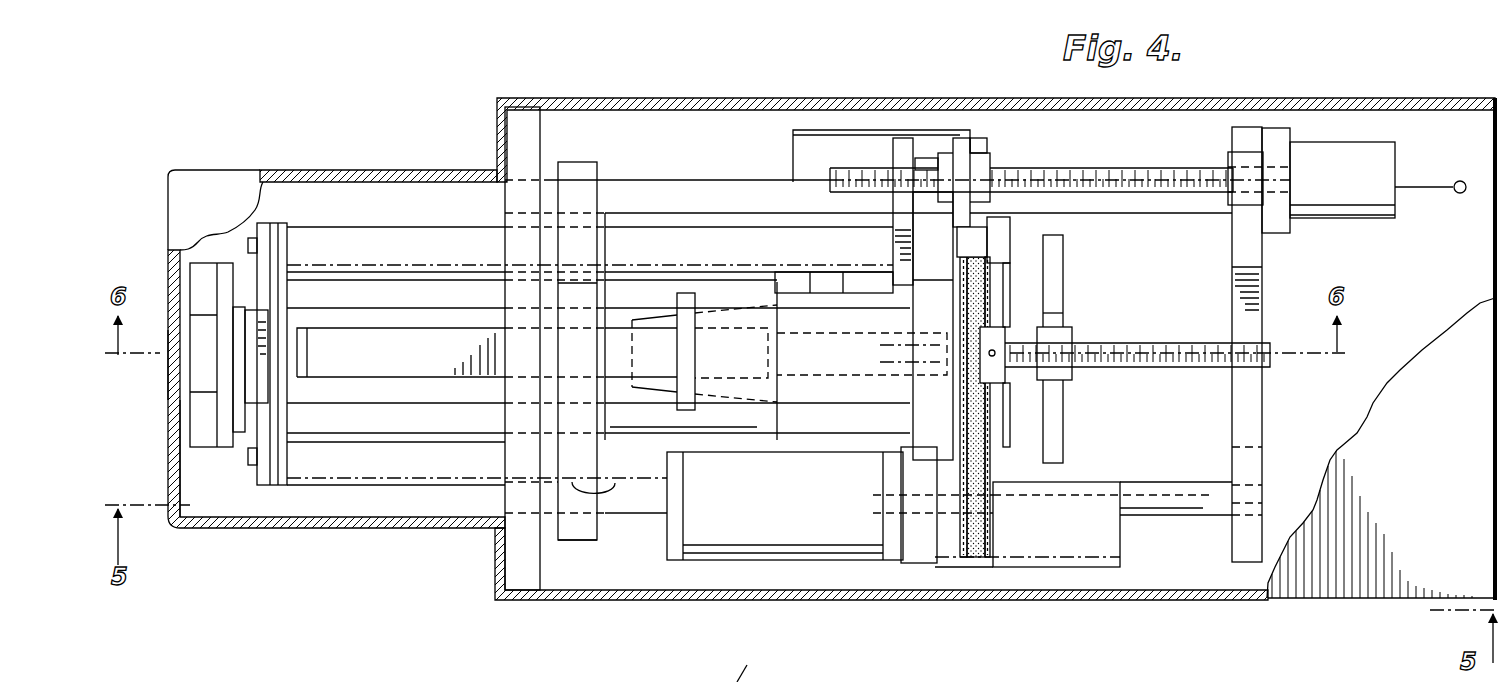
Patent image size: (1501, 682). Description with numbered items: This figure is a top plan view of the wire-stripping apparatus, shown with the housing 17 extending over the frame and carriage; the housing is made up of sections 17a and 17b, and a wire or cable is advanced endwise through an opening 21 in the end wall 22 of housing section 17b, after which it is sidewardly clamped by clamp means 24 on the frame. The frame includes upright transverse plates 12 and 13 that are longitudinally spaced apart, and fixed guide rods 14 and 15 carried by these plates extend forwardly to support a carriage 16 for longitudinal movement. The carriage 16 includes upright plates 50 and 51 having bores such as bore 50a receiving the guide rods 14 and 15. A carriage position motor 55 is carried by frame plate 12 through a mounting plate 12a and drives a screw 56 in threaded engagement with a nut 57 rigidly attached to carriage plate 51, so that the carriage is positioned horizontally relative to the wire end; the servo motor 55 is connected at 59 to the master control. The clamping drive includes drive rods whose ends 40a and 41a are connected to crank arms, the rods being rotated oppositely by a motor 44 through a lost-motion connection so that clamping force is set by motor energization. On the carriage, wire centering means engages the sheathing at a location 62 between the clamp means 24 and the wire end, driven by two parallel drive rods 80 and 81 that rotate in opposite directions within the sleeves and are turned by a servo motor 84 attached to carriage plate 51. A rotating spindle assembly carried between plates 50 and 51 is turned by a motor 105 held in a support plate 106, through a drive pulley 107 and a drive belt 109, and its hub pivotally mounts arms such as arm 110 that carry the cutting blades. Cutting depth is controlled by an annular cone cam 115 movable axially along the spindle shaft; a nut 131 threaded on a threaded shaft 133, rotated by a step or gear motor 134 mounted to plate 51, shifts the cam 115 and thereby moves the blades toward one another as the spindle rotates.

The upright transverse plate 12 is at (1263, 398).
The mounting plate 12a is at (1290, 230).
The upright transverse plate 13 is at (518, 553).
The guide rod 14 is at (696, 183).
The guide rod 15 is at (632, 503).
The carriage 16 is at (586, 553).
The housing 17 is at (1309, 605).
The housing section 17a is at (695, 98).
The housing section 17b is at (387, 170).
The opening 21 is at (170, 363).
The end wall 22 is at (172, 428).
The clamp means 24 is at (185, 279).
The end of drive rod 40a is at (598, 290).
The end of drive rod 41a is at (598, 418).
The motor 44 is at (1050, 545).
The upright carriage plate 50 is at (598, 168).
The bore 50a is at (617, 482).
The upright carriage plate 51 is at (932, 246).
The carriage position motor 55 is at (1323, 142).
The screw 56 is at (1150, 170).
The nut 57 is at (990, 153).
The connection 59 is at (1452, 191).
The wire engaging and centering location 62 is at (287, 218).
The drive rod 80 is at (590, 249).
The drive rod 81 is at (477, 463).
The servo motor 84 is at (825, 142).
The spindle motor 105 is at (776, 520).
The support plate 106 is at (903, 537).
The drive pulley 107 is at (1003, 545).
The drive belt 109 is at (975, 549).
The arm 110 is at (532, 353).
The annular cone cam 115 is at (653, 318).
The nut 131 is at (1075, 376).
The threaded shaft 133 is at (1160, 343).
The step or gear motor 134 is at (827, 370).